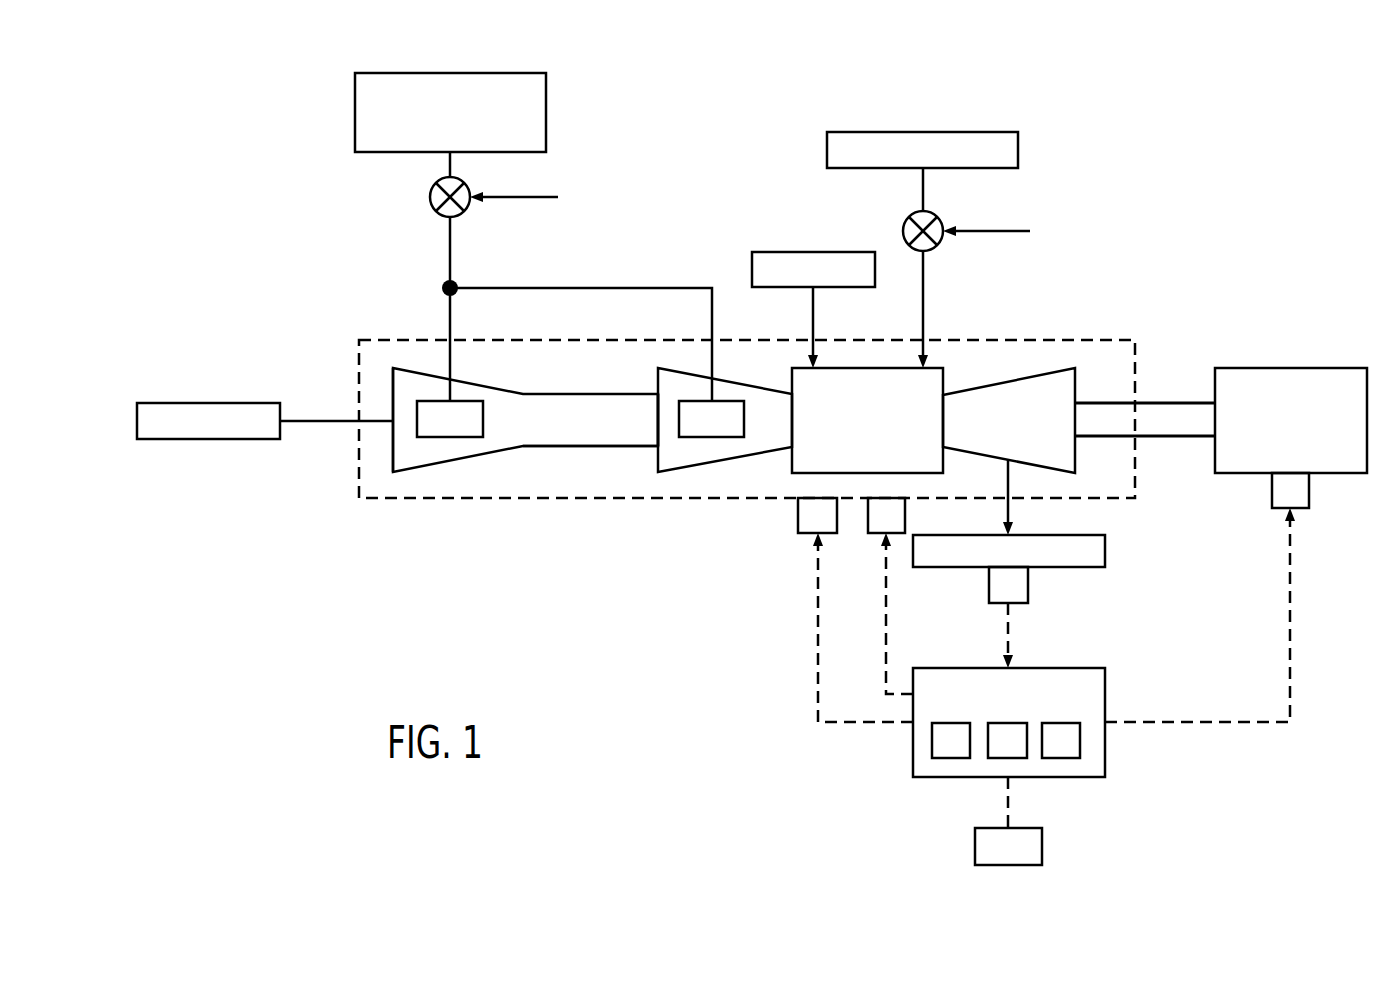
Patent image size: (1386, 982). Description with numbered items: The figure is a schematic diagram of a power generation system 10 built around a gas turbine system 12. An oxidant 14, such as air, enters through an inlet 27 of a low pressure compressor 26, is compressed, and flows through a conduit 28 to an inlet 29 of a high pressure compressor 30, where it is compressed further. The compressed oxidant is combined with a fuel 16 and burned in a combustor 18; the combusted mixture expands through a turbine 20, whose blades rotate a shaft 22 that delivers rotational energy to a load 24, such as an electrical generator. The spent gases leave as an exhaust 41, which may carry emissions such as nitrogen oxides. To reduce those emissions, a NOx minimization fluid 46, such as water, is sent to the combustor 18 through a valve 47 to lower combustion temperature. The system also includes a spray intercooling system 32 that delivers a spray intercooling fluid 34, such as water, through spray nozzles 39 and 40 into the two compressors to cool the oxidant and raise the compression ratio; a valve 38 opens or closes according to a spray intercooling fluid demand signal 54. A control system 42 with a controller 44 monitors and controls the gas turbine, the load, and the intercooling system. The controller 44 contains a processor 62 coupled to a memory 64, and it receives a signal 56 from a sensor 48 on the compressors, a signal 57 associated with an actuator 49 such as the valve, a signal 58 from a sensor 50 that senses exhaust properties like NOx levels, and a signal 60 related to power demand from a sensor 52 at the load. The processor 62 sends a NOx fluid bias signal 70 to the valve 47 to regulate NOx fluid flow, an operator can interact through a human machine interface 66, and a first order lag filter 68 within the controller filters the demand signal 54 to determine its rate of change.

The power generation system 10 is at (1200, 150).
The gas turbine system 12 is at (420, 340).
The oxidant 14 is at (208, 402).
The fuel 16 is at (815, 252).
The combustor 18 is at (790, 381).
The turbine 20 is at (1007, 382).
The shaft 22 is at (1147, 403).
The load 24 is at (1290, 368).
The low pressure compressor 26 is at (452, 460).
The inlet 27 is at (393, 421).
The conduit 28 is at (593, 447).
The inlet 29 is at (660, 423).
The high pressure compressor 30 is at (722, 460).
The spray intercooling system 32 is at (740, 200).
The spray intercooling fluid 34 is at (546, 113).
The valve 38 is at (432, 196).
The spray nozzle 39 is at (417, 410).
The spray nozzle 40 is at (712, 437).
The exhaust 41 is at (1105, 550).
The control system 42 is at (1117, 667).
The controller 44 is at (1105, 692).
The NOx minimization fluid 46 is at (1018, 145).
The valve 47 is at (938, 246).
The sensor 48 is at (798, 516).
The actuator 49 is at (868, 516).
The sensor 50 is at (1028, 585).
The sensor 52 is at (1309, 490).
The spray intercooling fluid demand signal 54 is at (522, 197).
The signal 56 is at (818, 637).
The signal 57 is at (886, 622).
The signal 58 is at (1008, 630).
The signal 60 is at (1290, 620).
The processor 62 is at (1008, 758).
The memory 64 is at (1061, 758).
The human machine interface 66 is at (975, 855).
The first order lag filter 68 is at (951, 758).
The NOx fluid bias signal 70 is at (993, 231).